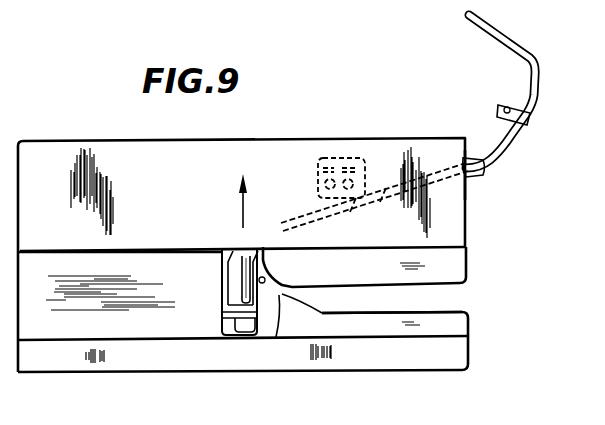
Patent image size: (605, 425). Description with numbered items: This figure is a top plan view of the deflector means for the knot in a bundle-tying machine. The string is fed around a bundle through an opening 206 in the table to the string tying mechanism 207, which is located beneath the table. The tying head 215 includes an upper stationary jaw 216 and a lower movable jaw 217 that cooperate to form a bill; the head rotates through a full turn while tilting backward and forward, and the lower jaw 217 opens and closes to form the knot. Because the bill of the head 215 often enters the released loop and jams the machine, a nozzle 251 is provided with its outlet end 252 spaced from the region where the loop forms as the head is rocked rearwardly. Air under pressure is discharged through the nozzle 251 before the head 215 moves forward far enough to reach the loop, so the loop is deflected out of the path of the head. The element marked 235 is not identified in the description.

The opening 206 is at (447, 300).
The tying head 215 is at (222, 279).
The string tying mechanism 207 is at (229, 292).
The plunger slot 235 is at (230, 262).
The lower movable jaw 217 is at (270, 293).
The upper stationary jaw 216 is at (250, 327).
The outlet end 252 is at (280, 229).
The nozzle 251 is at (330, 222).